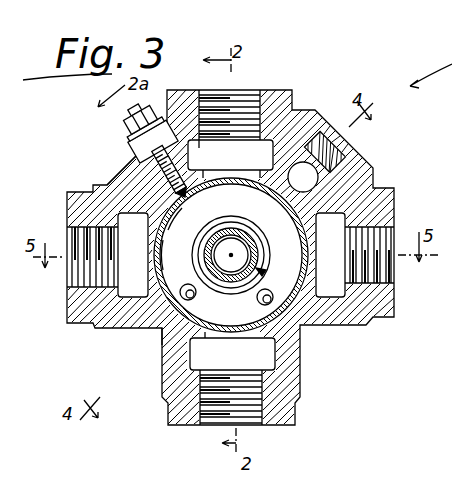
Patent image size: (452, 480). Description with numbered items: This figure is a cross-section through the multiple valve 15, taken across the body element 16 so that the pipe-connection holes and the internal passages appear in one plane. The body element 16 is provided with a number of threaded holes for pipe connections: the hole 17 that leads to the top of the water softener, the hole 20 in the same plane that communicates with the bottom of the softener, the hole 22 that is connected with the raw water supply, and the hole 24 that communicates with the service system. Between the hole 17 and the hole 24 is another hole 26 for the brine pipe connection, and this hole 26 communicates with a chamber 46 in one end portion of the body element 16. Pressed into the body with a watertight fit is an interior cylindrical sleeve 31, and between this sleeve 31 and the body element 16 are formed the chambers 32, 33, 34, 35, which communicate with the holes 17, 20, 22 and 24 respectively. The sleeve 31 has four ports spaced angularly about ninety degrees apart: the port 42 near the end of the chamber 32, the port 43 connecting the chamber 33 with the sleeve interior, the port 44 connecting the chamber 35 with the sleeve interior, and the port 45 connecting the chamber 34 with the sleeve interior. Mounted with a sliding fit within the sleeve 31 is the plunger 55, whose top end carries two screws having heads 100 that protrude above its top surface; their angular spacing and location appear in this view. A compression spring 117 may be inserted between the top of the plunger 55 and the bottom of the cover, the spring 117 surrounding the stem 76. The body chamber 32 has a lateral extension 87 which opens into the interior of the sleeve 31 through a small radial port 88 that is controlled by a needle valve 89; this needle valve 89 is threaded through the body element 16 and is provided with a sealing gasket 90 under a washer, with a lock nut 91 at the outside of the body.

The multiple valve 15 is at (148, 386).
The body element 16 is at (160, 328).
The hole 17 is at (240, 100).
The hole 20 is at (210, 425).
The hole 22 is at (78, 275).
The hole 24 is at (393, 273).
The hole 26 is at (338, 147).
The cylindrical sleeve 31 is at (176, 218).
The chamber 32 is at (230, 155).
The chamber 33 is at (232, 354).
The chamber 34 is at (133, 255).
The chamber 35 is at (330, 255).
The port 42 is at (236, 206).
The port 43 is at (235, 320).
The port 44 is at (282, 258).
The port 45 is at (160, 262).
The chamber 46 is at (306, 180).
The plunger 55 is at (204, 309).
The stem 76 is at (250, 247).
The lateral extension 87 is at (190, 176).
The radial port 88 is at (182, 224).
The needle valve 89 is at (122, 115).
The sealing gasket 90 is at (133, 153).
The lock nut 91 is at (146, 104).
The screw heads 100 is at (272, 291).
The compression spring 117 is at (238, 223).